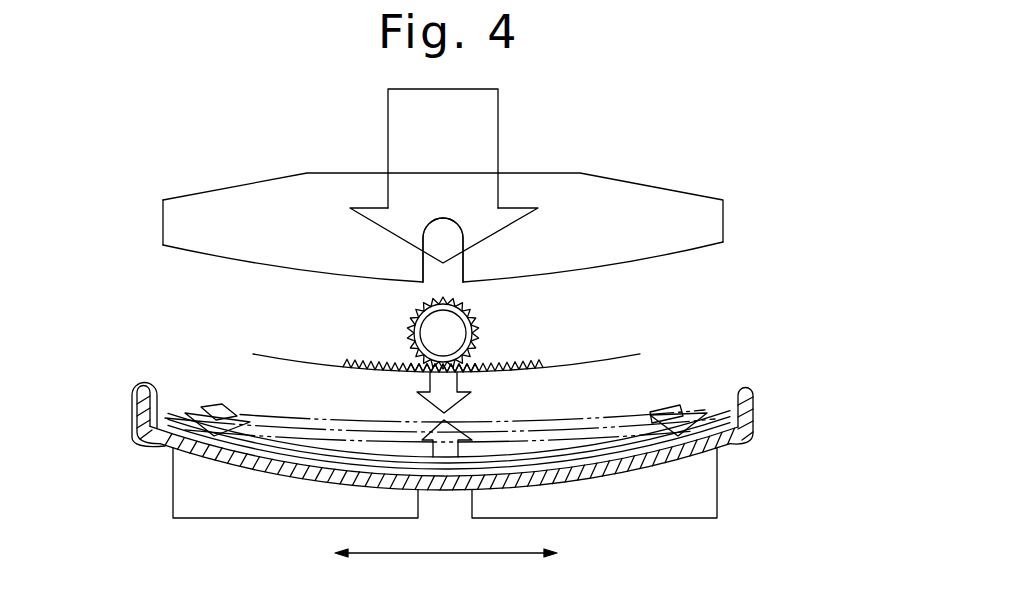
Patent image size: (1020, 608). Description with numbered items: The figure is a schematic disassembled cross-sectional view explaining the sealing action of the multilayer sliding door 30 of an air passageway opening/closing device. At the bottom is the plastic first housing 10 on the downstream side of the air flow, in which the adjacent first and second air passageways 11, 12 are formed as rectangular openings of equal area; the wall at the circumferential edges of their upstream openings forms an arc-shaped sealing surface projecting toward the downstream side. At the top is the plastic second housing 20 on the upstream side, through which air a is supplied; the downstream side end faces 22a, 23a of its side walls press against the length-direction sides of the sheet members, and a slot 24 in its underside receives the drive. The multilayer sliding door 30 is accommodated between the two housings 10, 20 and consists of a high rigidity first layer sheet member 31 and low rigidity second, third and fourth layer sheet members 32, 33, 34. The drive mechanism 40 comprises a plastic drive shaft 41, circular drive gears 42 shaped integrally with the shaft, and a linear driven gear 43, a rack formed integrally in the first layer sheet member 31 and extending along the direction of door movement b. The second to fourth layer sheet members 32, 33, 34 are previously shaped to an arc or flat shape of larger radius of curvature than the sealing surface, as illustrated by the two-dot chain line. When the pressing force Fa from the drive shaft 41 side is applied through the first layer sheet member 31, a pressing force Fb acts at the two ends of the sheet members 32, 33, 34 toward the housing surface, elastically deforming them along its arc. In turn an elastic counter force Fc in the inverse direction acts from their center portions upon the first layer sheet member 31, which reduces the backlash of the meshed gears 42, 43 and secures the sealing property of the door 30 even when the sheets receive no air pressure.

The first housing 10 is at (457, 418).
The first air passageway 11 is at (685, 520).
The second air passageway 12 is at (187, 518).
The second housing 20 is at (692, 191).
The downstream side end face 22a is at (287, 268).
The downstream side end face 23a is at (287, 268).
The slot 24 is at (450, 277).
The multilayer sliding door 30 is at (414, 338).
The first layer sheet member 31 is at (640, 354).
The second layer sheet member 32 is at (272, 447).
The third layer sheet member 33 is at (312, 458).
The fourth layer sheet member 34 is at (340, 470).
The drive mechanism 40 is at (433, 329).
The drive shaft 41 is at (443, 333).
The drive gear 42 is at (410, 341).
The driven gear 43 is at (527, 364).
The air supply a is at (498, 103).
The direction of door movement b is at (437, 555).
The pressing force Fa is at (455, 407).
The pressing force Fb is at (217, 410).
The elastic counter force Fc is at (445, 458).